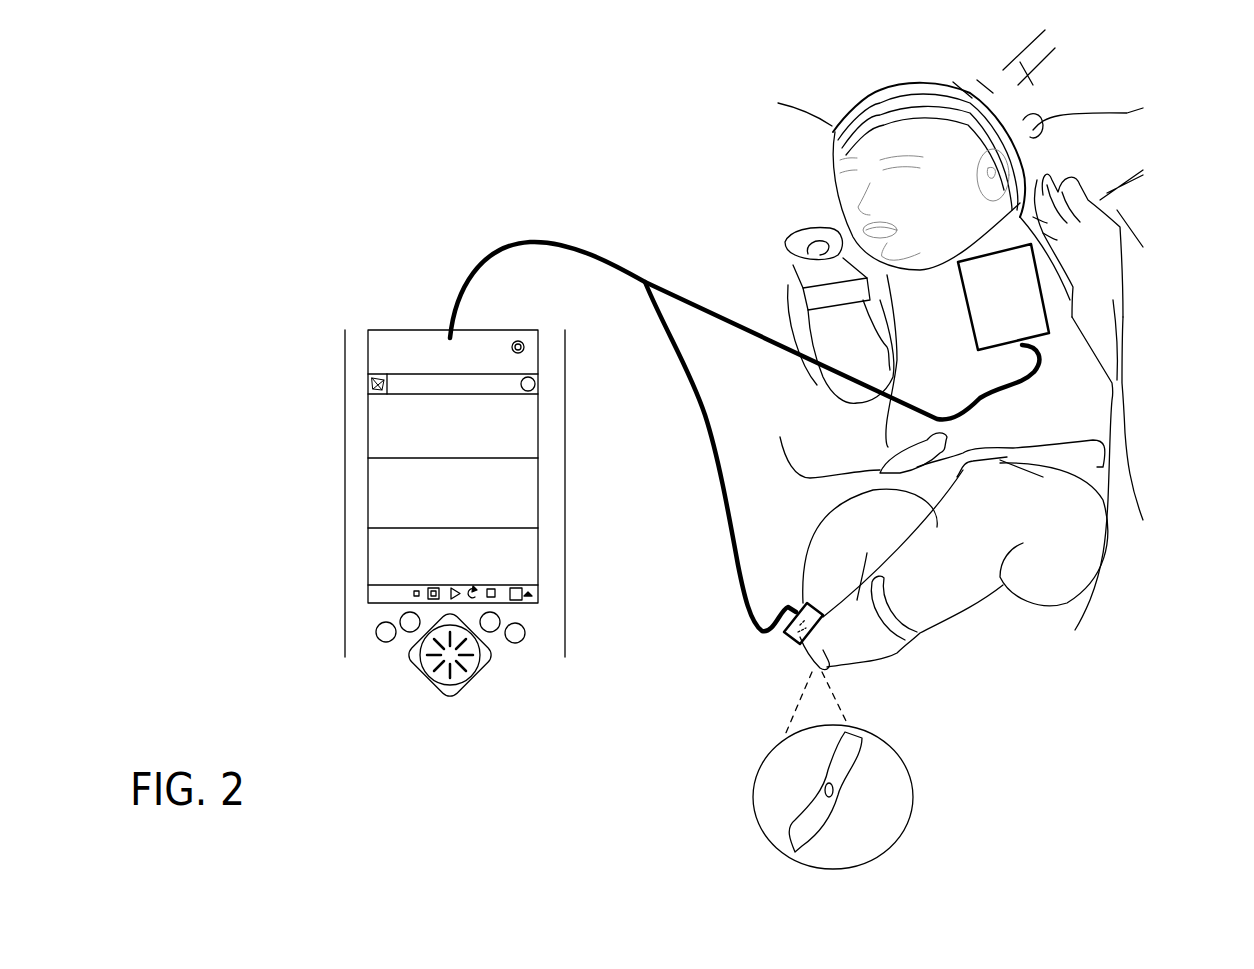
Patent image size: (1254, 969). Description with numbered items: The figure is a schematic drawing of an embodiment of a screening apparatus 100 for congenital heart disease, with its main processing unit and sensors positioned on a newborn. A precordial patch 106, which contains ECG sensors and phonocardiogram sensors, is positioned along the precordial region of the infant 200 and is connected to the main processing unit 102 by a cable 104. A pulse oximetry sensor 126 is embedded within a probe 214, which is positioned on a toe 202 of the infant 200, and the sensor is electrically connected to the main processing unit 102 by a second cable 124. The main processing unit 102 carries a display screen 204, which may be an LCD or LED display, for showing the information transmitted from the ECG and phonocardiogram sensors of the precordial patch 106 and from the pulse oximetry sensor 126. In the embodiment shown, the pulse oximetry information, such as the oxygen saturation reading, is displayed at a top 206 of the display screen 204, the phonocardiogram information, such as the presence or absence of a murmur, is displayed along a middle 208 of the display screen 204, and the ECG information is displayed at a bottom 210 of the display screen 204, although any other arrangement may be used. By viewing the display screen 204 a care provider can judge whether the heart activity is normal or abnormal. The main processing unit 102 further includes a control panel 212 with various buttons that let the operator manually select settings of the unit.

The monitoring system 100 is at (601, 210).
The main processing unit 102 is at (345, 590).
The cable 104 is at (697, 300).
The precordial patch 106 is at (1043, 288).
The cable 124 is at (735, 565).
The pulse oximetry sensor 126 is at (847, 783).
The infant 200 is at (1090, 395).
The toe 202 is at (813, 633).
The display screen 204 is at (368, 440).
The top of display screen 206 is at (522, 437).
The middle of display screen 208 is at (522, 506).
The bottom of display screen 210 is at (522, 580).
The control panel 212 is at (500, 660).
The probe 214 is at (800, 637).